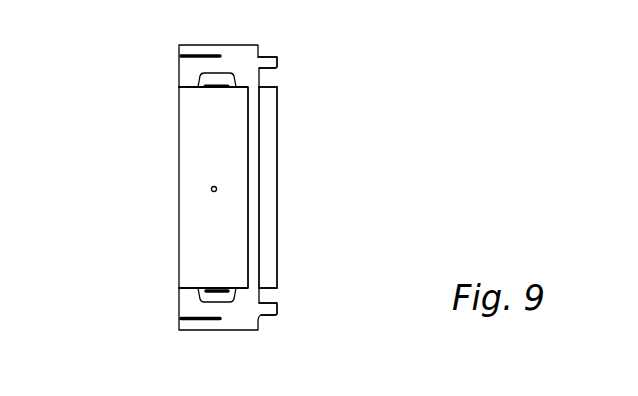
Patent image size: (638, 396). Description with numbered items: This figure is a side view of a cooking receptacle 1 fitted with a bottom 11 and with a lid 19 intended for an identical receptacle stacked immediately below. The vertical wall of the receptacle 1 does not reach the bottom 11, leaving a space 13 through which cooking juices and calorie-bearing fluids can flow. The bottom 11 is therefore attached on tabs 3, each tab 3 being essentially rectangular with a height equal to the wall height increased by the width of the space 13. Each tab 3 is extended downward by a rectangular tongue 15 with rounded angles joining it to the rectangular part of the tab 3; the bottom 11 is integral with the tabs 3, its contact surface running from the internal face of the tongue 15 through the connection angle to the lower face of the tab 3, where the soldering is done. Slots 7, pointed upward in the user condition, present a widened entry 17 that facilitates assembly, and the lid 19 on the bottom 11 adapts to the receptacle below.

The receptacle 1 is at (140, 198).
The tab 3 is at (238, 45).
The slot 7 is at (196, 55).
The bottom 11 is at (260, 144).
The space 13 is at (257, 206).
The tongue 15 is at (278, 62).
The widened entry 17 is at (180, 56).
The lid 19 is at (277, 241).